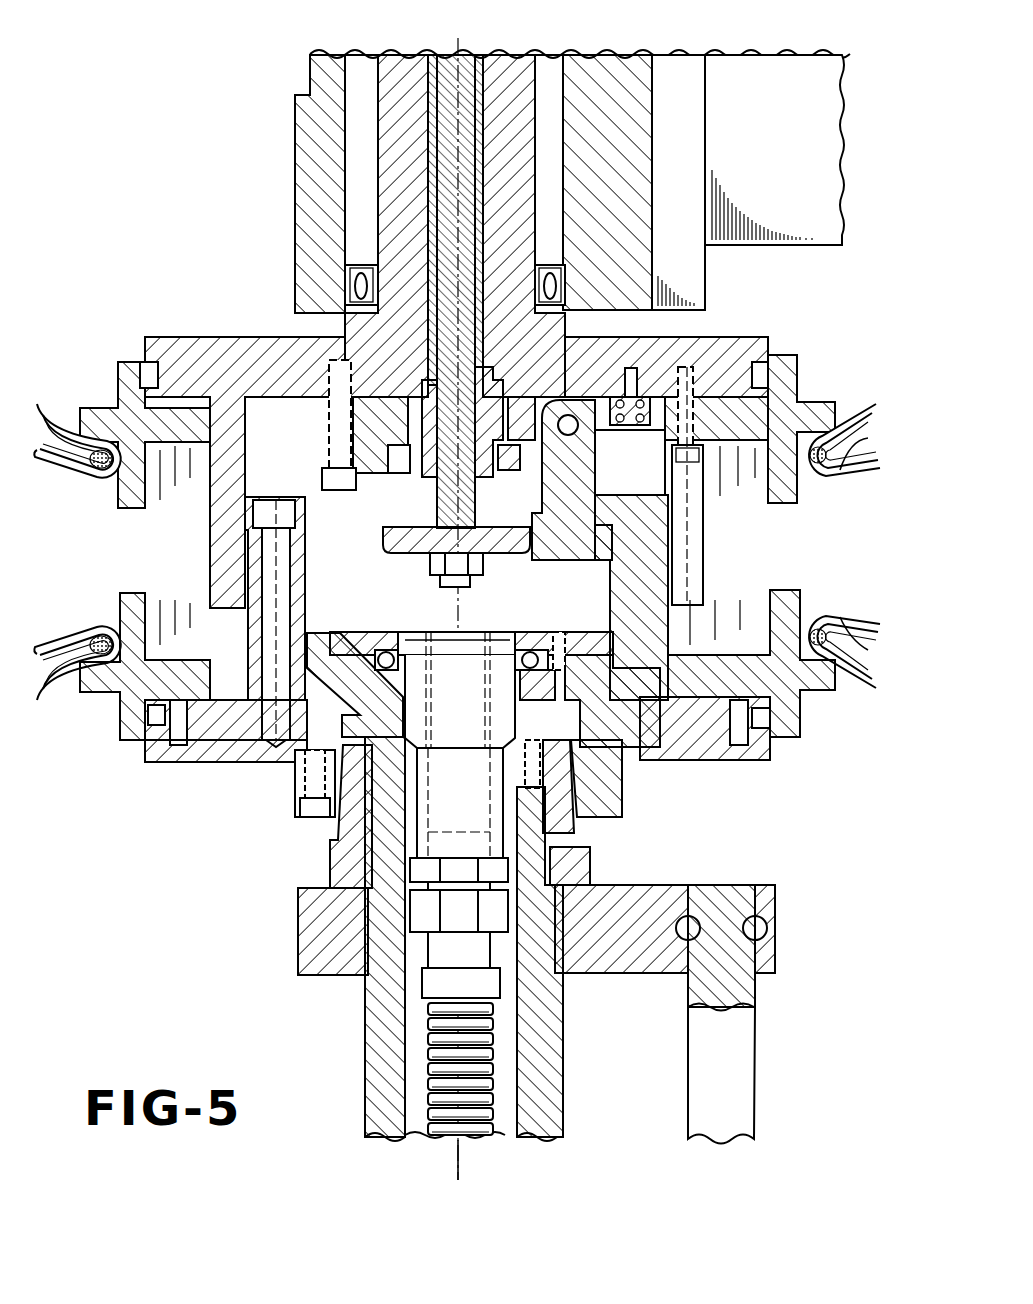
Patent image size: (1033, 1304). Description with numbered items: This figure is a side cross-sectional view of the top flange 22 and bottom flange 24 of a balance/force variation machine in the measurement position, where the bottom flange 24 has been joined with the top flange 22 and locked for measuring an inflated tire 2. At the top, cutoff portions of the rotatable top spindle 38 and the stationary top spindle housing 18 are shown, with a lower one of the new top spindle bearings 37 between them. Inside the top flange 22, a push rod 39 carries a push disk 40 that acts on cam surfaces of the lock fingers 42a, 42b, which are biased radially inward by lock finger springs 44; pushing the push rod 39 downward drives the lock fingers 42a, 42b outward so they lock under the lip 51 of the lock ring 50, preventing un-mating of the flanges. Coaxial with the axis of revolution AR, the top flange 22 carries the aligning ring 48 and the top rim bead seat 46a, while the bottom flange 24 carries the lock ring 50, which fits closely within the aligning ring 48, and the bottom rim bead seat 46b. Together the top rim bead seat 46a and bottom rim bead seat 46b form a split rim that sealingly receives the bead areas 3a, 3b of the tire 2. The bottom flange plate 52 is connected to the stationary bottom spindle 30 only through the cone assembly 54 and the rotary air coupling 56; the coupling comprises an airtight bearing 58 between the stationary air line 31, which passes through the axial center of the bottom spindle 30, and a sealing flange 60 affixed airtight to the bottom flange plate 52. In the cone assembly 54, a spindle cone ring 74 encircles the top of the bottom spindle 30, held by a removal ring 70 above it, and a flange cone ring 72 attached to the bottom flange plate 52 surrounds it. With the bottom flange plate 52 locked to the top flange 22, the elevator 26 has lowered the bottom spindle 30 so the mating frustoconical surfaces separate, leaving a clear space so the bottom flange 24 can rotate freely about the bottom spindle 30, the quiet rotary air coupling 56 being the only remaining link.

The tire 2 is at (830, 422).
The bead area 3a is at (845, 462).
The bead area 3b is at (845, 625).
The top spindle housing 18 is at (322, 125).
The top flange 22 is at (200, 318).
The bottom flange 24 is at (752, 775).
The elevator 26 is at (757, 1060).
The bottom spindle 30 is at (563, 1068).
The air line 31 is at (452, 1108).
The top spindle bearings 37 is at (362, 262).
The top spindle 38 is at (510, 70).
The push rod 39 is at (455, 72).
The push disk 40 is at (432, 542).
The lock finger 42a is at (345, 563).
The lock finger 42b is at (568, 558).
The lock finger springs 44 is at (628, 427).
The top rim bead seat 46a is at (118, 482).
The bottom rim bead seat 46b is at (121, 600).
The aligning ring 48 is at (707, 545).
The lock ring 50 is at (650, 652).
The lip 51 is at (297, 500).
The bottom flange plate 52 is at (190, 762).
The cone assembly 54 is at (275, 810).
The rotary air coupling 56 is at (470, 633).
The airtight bearing 58 is at (436, 633).
The sealing flange 60 is at (327, 632).
The removal ring 70 is at (612, 782).
The flange cone ring 72 is at (577, 812).
The spindle cone ring 74 is at (350, 823).
The axis of revolution AR is at (463, 1148).